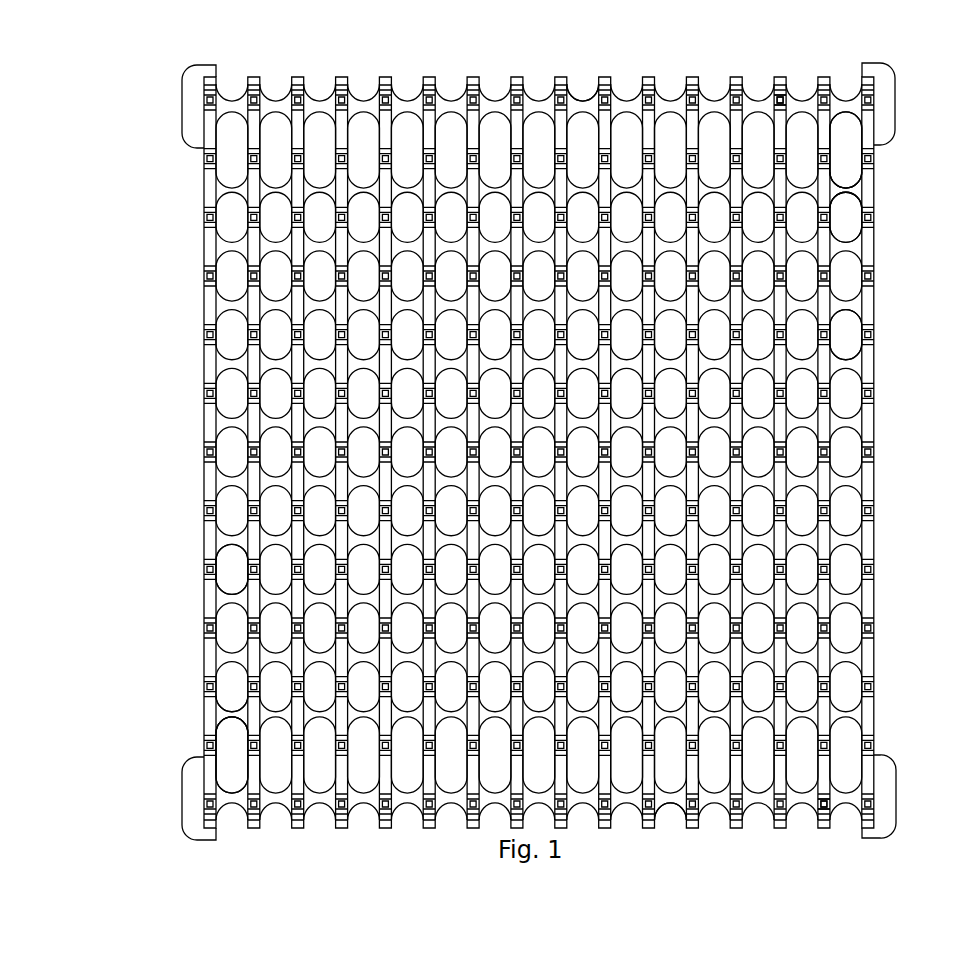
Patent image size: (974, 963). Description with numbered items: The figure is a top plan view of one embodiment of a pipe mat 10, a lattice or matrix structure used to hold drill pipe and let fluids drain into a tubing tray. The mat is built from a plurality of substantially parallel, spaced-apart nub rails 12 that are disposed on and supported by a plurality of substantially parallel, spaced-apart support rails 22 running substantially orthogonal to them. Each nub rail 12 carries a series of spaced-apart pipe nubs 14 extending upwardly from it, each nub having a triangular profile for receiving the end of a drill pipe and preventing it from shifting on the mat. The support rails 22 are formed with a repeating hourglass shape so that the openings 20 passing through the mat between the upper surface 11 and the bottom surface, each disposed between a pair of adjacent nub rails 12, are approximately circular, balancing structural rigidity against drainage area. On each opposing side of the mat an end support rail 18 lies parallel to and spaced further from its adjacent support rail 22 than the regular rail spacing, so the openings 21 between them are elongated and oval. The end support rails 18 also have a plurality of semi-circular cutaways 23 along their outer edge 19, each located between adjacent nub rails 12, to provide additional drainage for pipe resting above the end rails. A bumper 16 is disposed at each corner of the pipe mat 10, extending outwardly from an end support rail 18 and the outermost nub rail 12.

The pipe mat 10 is at (100, 305).
The upper surface 11 is at (840, 248).
The nub rail 12 is at (297, 128).
The pipe nub 14 is at (200, 455).
The bumper 16 is at (180, 101).
The end support rail 18 is at (788, 103).
The outer edge 19 is at (473, 63).
The opening 20 is at (843, 333).
The opening 21 is at (845, 139).
The support rail 22 is at (843, 188).
The cutaway 23 is at (577, 82).